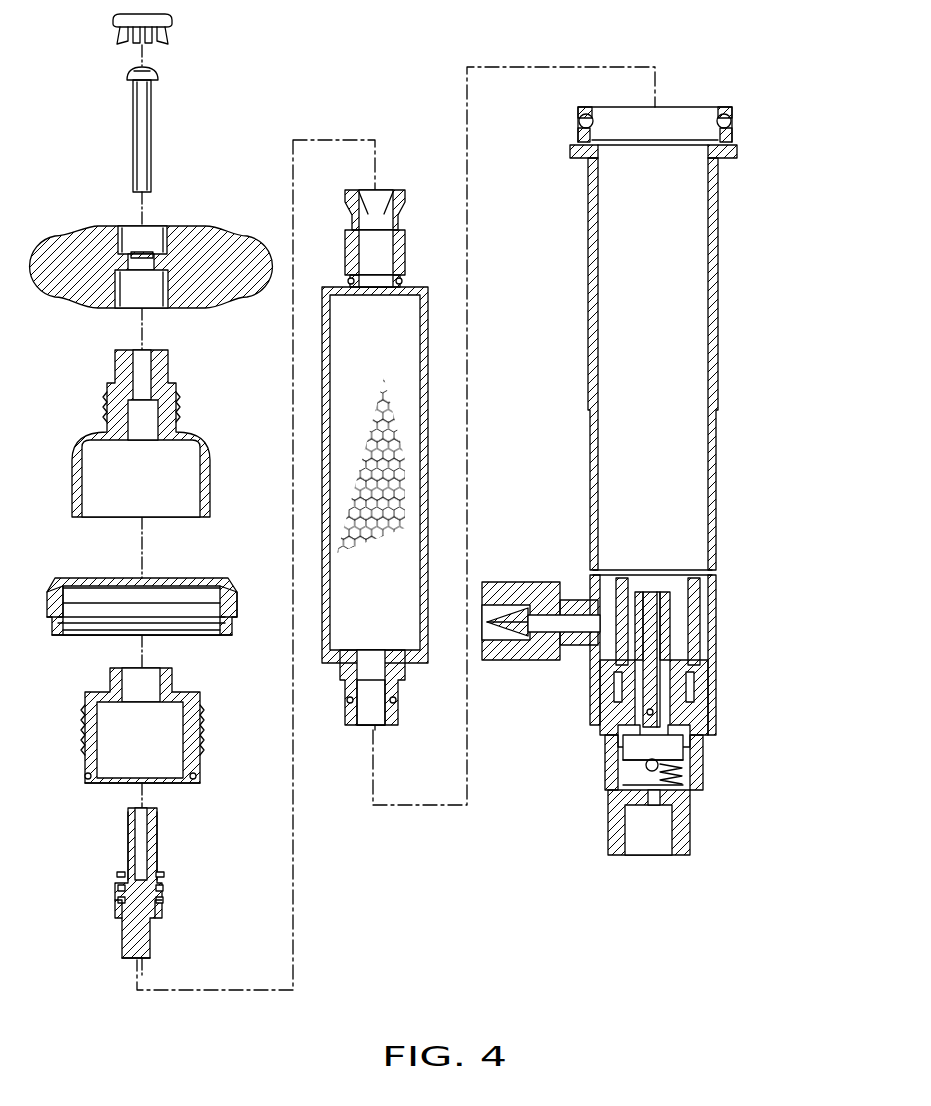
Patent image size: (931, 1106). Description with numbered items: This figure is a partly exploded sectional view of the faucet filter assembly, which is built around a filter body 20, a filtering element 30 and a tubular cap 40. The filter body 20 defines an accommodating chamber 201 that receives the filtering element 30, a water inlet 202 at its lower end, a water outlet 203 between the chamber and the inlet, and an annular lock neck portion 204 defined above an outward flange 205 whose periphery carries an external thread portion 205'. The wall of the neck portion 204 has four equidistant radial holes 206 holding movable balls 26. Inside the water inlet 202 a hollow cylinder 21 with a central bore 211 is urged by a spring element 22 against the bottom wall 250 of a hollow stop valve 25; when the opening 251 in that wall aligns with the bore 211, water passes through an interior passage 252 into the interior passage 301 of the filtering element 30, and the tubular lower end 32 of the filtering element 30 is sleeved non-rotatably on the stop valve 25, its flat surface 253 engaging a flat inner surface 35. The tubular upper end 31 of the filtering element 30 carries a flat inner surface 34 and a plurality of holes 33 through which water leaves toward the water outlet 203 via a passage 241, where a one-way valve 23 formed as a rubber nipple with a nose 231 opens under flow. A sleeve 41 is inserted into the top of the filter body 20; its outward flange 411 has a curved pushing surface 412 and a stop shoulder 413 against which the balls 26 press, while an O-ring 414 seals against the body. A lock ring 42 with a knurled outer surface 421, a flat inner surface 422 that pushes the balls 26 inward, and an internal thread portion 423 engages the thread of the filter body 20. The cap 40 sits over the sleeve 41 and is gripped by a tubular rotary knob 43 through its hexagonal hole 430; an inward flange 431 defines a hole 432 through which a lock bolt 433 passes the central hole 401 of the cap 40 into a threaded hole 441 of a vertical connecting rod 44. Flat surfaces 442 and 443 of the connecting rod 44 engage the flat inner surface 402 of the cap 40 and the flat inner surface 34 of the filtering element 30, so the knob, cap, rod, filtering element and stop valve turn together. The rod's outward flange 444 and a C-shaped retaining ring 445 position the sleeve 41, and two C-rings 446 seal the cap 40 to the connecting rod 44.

The filter body 20 is at (646, 488).
The accommodating chamber 201 is at (700, 305).
The water inlet 202 is at (652, 838).
The water outlet 203 is at (563, 620).
The annular lock neck portion 204 is at (728, 135).
The outward flange 205 is at (683, 184).
The external thread portion 205' is at (754, 165).
The radial holes 206 is at (738, 100).
The balls 26 is at (731, 123).
The hollow cylinder 21 is at (660, 773).
The central bore 211 is at (640, 765).
The spring element 22 is at (668, 778).
The one-way valve 23 is at (541, 619).
The nose 231 is at (505, 615).
The passage 241 is at (600, 628).
The hollow stop valve 25 is at (712, 715).
The bottom wall 250 is at (620, 740).
The opening 251 is at (700, 752).
The interior passage 252 is at (660, 600).
The flat surface 253 is at (670, 622).
The filtering element 30 is at (431, 461).
The interior passage 301 is at (410, 338).
The neck 31 is at (398, 243).
The tubular lower end 32 is at (398, 717).
The holes 33 is at (405, 282).
The flat inner surface 34 is at (378, 210).
The flat inner surface 35 is at (378, 708).
The tubular cap 40 is at (130, 424).
The central hole 401 is at (147, 367).
The flat inner surface 402 is at (143, 437).
The sleeve 41 is at (102, 744).
The outward flange 411 is at (80, 725).
The curved pushing surface 412 is at (84, 770).
The stop shoulder 413 is at (78, 745).
The O-ring 414 is at (85, 782).
The lock ring 42 is at (130, 597).
The knurled outer surface 421 is at (50, 603).
The flat inner surface 422 is at (208, 597).
The internal thread portion 423 is at (215, 635).
The tubular rotary knob 43 is at (151, 251).
The hexagonal hole 430 is at (148, 303).
The inward flange 431 is at (120, 245).
The hole 432 is at (146, 262).
The lock bolt 433 is at (133, 137).
The vertical connecting rod 44 is at (136, 885).
The threaded hole 441 is at (145, 830).
The flat surface 442 is at (128, 838).
The flat surface 443 is at (150, 945).
The outward flange 444 is at (118, 910).
The C-shaped retaining ring 445 is at (162, 876).
The C-rings 446 is at (163, 900).